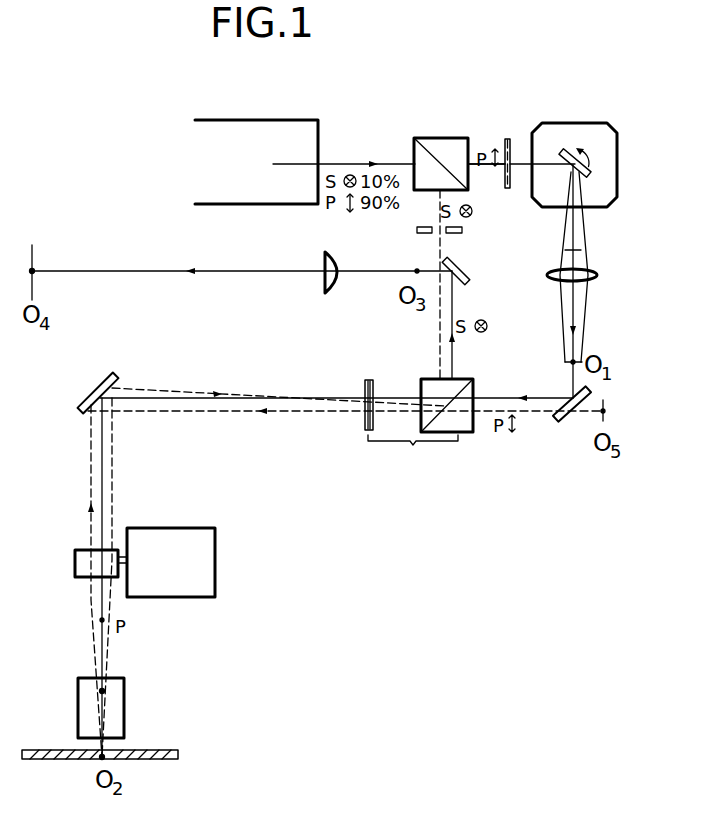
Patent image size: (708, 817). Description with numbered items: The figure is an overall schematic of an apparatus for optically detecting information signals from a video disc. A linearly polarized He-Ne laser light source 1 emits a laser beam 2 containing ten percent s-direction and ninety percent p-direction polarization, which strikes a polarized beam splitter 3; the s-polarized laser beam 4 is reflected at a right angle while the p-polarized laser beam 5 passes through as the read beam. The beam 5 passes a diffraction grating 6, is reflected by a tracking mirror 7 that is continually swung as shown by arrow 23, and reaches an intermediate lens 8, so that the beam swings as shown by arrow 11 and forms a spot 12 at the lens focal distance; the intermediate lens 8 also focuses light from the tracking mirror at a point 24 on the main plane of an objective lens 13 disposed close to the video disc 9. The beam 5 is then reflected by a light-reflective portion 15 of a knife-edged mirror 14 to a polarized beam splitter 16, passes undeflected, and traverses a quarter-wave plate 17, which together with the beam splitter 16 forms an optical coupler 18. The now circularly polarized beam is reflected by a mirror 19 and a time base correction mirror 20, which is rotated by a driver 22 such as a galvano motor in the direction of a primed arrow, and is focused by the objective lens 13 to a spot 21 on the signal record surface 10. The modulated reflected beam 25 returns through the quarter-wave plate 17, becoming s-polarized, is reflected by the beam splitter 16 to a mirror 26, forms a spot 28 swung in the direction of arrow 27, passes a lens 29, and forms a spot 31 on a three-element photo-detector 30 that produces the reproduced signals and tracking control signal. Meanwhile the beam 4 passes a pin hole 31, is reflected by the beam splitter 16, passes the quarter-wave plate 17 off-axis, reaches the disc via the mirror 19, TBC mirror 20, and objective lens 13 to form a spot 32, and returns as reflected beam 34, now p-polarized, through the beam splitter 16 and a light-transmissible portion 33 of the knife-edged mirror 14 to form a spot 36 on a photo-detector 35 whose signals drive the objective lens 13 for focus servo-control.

The laser light source 1 is at (255, 122).
The laser beam 2 is at (340, 164).
The polarized beam splitter 3 is at (432, 138).
The laser beam 4 is at (437, 195).
The laser beam 5 is at (468, 158).
The diffraction grating 6 is at (506, 139).
The tracking mirror 7 is at (566, 152).
The intermediate lens 8 is at (598, 272).
The video disc 9 is at (150, 750).
The signal record surface 10 is at (140, 759).
The arrow 11 is at (572, 252).
The spot 12 is at (570, 365).
The objective lens 13 is at (124, 690).
The knife-edged mirror 14 is at (571, 423).
The light-reflective portion 15 is at (588, 392).
The polarized beam splitter 16 is at (462, 433).
The quarter-wave plate 17 is at (366, 432).
The optical coupler 18 is at (413, 454).
The mirror 19 is at (113, 377).
The time base correction mirror 20 is at (113, 550).
The spot 21 is at (115, 760).
The driver 22 is at (207, 593).
The arrow 23 is at (589, 153).
The point 24 is at (104, 692).
The reflected beam 25 is at (352, 400).
The mirror 26 is at (468, 266).
The arrow 27 is at (420, 276).
The spot 28 is at (417, 266).
The lens 29 is at (322, 262).
The photo-detector 30 is at (35, 252).
The spot 31 is at (464, 230).
The spot 32 is at (95, 758).
The light-transmissible portion 33 is at (553, 421).
The reflected beam 34 is at (358, 400).
The photo-detector 35 is at (606, 413).
The spot 36 is at (592, 420).